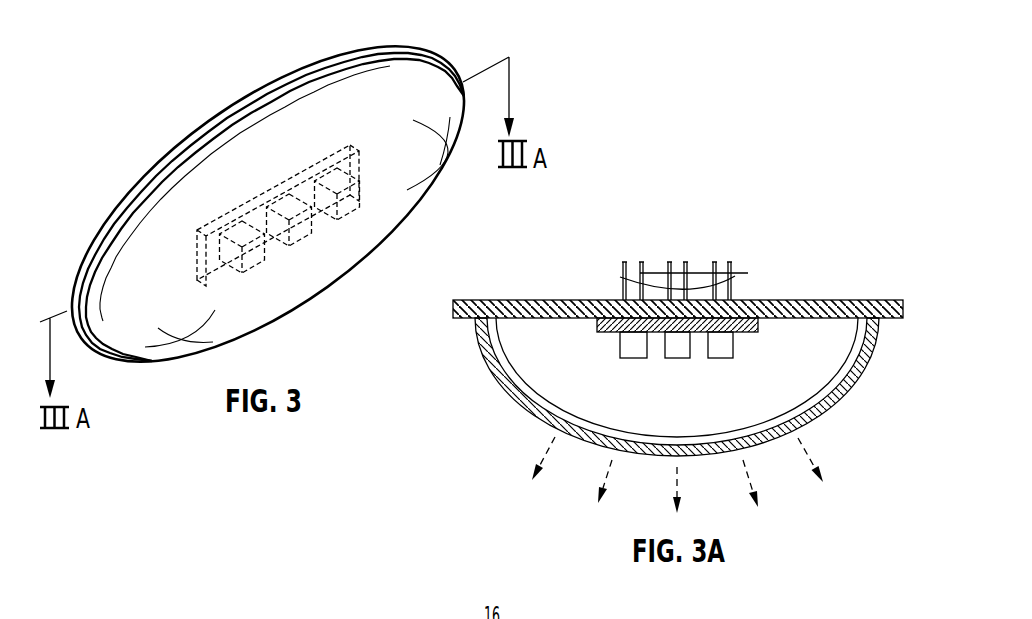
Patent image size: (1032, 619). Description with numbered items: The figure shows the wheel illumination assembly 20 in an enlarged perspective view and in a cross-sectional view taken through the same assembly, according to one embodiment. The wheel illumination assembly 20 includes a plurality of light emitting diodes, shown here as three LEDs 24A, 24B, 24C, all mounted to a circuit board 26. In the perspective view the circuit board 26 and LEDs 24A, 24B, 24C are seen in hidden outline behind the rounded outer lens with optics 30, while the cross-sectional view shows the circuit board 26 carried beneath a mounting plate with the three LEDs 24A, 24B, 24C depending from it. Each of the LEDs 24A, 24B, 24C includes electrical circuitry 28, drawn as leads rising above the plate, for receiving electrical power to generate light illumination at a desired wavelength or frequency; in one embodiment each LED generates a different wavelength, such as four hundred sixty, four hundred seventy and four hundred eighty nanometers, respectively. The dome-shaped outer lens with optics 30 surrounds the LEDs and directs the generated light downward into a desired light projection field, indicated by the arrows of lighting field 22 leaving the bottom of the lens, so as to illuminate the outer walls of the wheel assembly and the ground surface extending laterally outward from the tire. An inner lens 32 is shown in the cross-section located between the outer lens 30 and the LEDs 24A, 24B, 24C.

In FIG. 3, the wheel illumination assembly 20 is at (472, 30).
In FIG. 3A, the wheel illumination assembly 20 is at (807, 236).
In FIG. 3A, the lighting field 22 is at (670, 477).
In FIG. 3, the LED 24A is at (263, 262).
In FIG. 3A, the LED 24A is at (633, 361).
In FIG. 3, the LED 24B is at (313, 236).
In FIG. 3A, the LED 24B is at (677, 360).
In FIG. 3, the LED 24C is at (360, 207).
In FIG. 3A, the LED 24C is at (721, 361).
In FIG. 3, the circuit board 26 is at (207, 232).
In FIG. 3A, the circuit board 26 is at (596, 327).
In FIG. 3A, the electrical circuitry 28 is at (735, 276).
In FIG. 3, the outer lens with optics 30 is at (447, 183).
In FIG. 3A, the outer lens with optics 30 is at (507, 392).
In FIG. 3A, the inner lens 32 is at (516, 352).